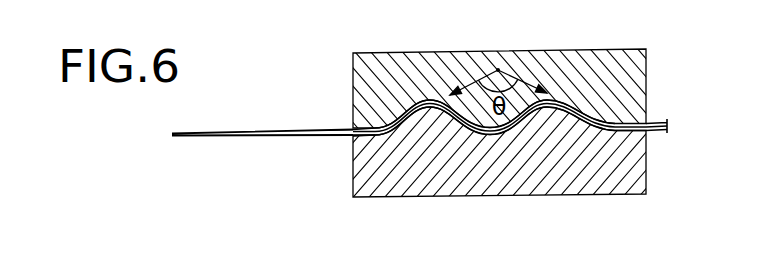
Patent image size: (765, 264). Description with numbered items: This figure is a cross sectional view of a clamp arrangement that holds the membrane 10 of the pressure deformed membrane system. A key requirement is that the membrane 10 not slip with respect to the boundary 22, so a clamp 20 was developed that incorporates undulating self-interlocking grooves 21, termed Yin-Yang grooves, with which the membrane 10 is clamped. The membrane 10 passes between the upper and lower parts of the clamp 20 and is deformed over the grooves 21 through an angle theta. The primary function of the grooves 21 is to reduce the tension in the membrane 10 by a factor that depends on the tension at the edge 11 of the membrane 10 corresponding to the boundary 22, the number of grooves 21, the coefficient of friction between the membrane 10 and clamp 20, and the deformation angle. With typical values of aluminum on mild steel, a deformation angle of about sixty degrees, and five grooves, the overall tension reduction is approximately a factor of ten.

The membrane 10 is at (213, 138).
The edge of the membrane 11 is at (350, 130).
The clamp 20 is at (347, 58).
The self-interlocking grooves 21 is at (432, 97).
The boundary 22 is at (351, 138).